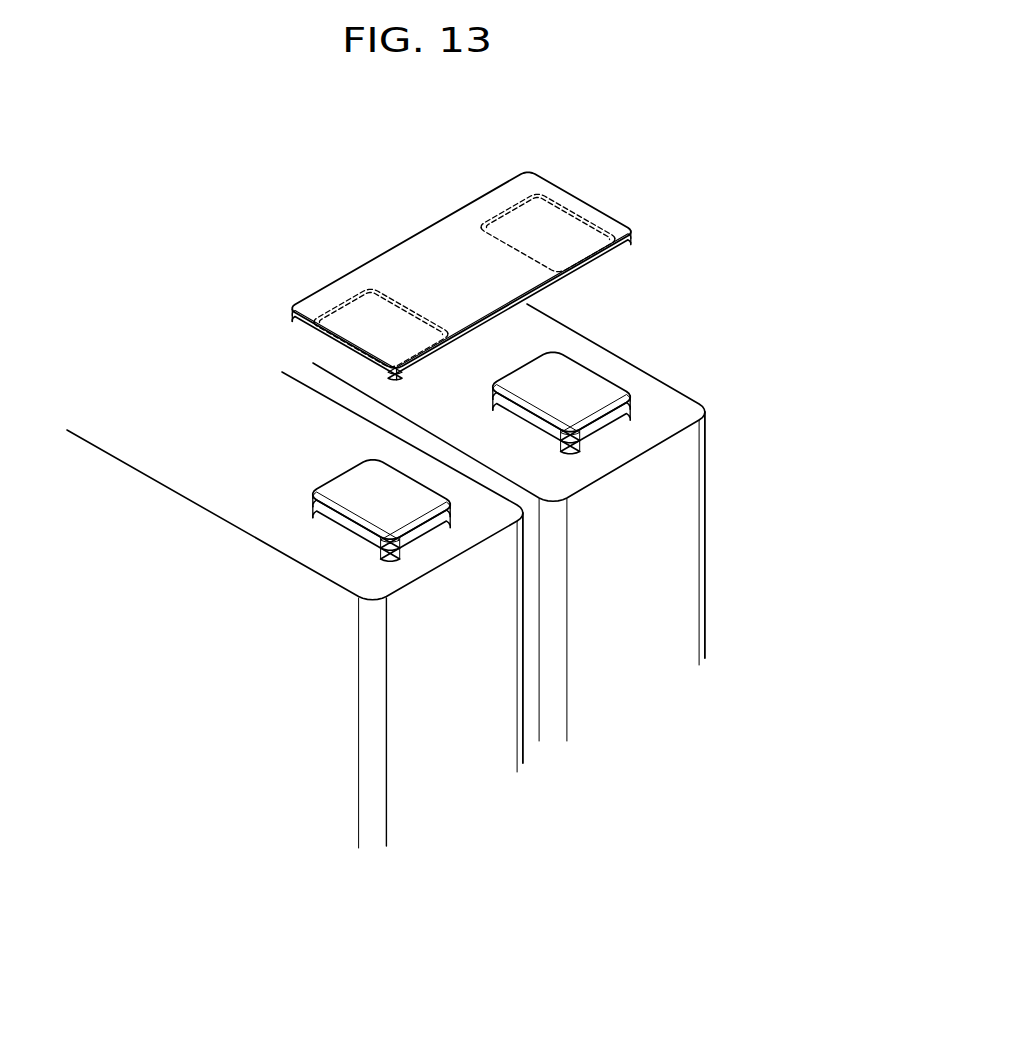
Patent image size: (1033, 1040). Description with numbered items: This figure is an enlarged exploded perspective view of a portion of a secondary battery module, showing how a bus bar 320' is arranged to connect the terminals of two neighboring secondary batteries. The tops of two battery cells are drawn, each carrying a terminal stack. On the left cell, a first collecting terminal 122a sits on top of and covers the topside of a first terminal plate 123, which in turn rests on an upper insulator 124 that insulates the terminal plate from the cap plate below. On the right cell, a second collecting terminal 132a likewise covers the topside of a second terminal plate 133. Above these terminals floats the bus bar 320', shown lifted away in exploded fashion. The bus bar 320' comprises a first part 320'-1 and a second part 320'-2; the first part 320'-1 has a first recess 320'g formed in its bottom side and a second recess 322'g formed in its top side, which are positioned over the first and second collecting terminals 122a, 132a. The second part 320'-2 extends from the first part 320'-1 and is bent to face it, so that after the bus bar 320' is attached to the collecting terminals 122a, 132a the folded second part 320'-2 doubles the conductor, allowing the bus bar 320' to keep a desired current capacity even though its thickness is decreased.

The bus bar 320' is at (406, 253).
The first part 320'-1 is at (408, 305).
The second part 320'-2 is at (408, 272).
The second recess 322'g is at (489, 230).
The first recess 320'g is at (502, 296).
The first collecting terminal 122a is at (350, 495).
The first terminal plate 123 is at (363, 533).
The upper insulator 124 is at (423, 543).
The second collecting terminal 132a is at (602, 398).
The second terminal plate 133 is at (607, 428).